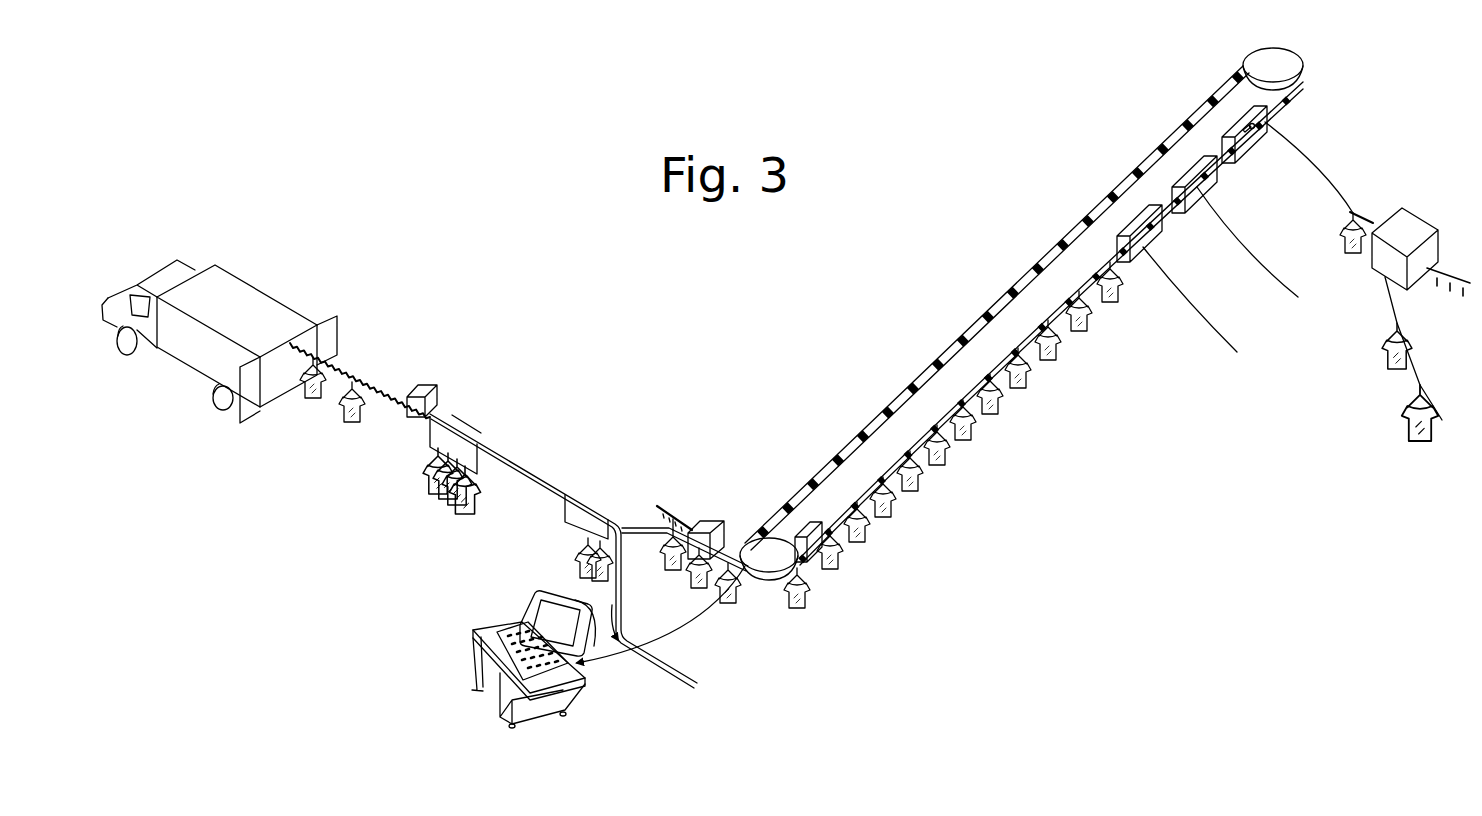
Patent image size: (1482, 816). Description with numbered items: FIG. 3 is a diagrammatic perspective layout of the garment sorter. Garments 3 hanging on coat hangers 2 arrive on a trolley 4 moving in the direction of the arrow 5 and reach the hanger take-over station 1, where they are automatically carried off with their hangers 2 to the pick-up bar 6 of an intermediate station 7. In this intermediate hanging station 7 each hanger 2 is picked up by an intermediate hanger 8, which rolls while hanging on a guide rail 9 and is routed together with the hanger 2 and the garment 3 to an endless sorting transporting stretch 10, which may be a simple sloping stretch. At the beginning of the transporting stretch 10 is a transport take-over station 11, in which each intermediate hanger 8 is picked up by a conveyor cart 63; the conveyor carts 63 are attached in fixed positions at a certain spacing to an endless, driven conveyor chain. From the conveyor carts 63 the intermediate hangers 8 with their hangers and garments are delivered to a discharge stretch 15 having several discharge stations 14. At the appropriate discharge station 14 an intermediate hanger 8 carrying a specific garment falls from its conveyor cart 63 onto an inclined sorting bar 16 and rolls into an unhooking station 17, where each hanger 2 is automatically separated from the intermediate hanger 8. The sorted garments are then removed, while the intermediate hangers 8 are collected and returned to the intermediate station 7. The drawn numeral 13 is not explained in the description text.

The hanger take-over station 1 is at (625, 505).
The coat hanger 2 is at (423, 480).
The garment 3 is at (465, 512).
The trolley 4 is at (430, 434).
The arrow 5 is at (478, 432).
The pick-up bar 6 is at (670, 532).
The intermediate station 7 is at (701, 521).
The intermediate hanger 8 is at (730, 598).
The guide rail 9 is at (775, 578).
The endless sorting transporting stretch 10 is at (865, 415).
The transport take-over station 11 is at (793, 525).
The garment on conveyor carrier 13 is at (1020, 380).
The discharge station 14 is at (1240, 118).
The discharge stretch 15 is at (1167, 118).
The inclined sorting bar 16 is at (1300, 145).
The unhooking station 17 is at (1417, 228).
The conveyor cart 63 is at (1010, 368).